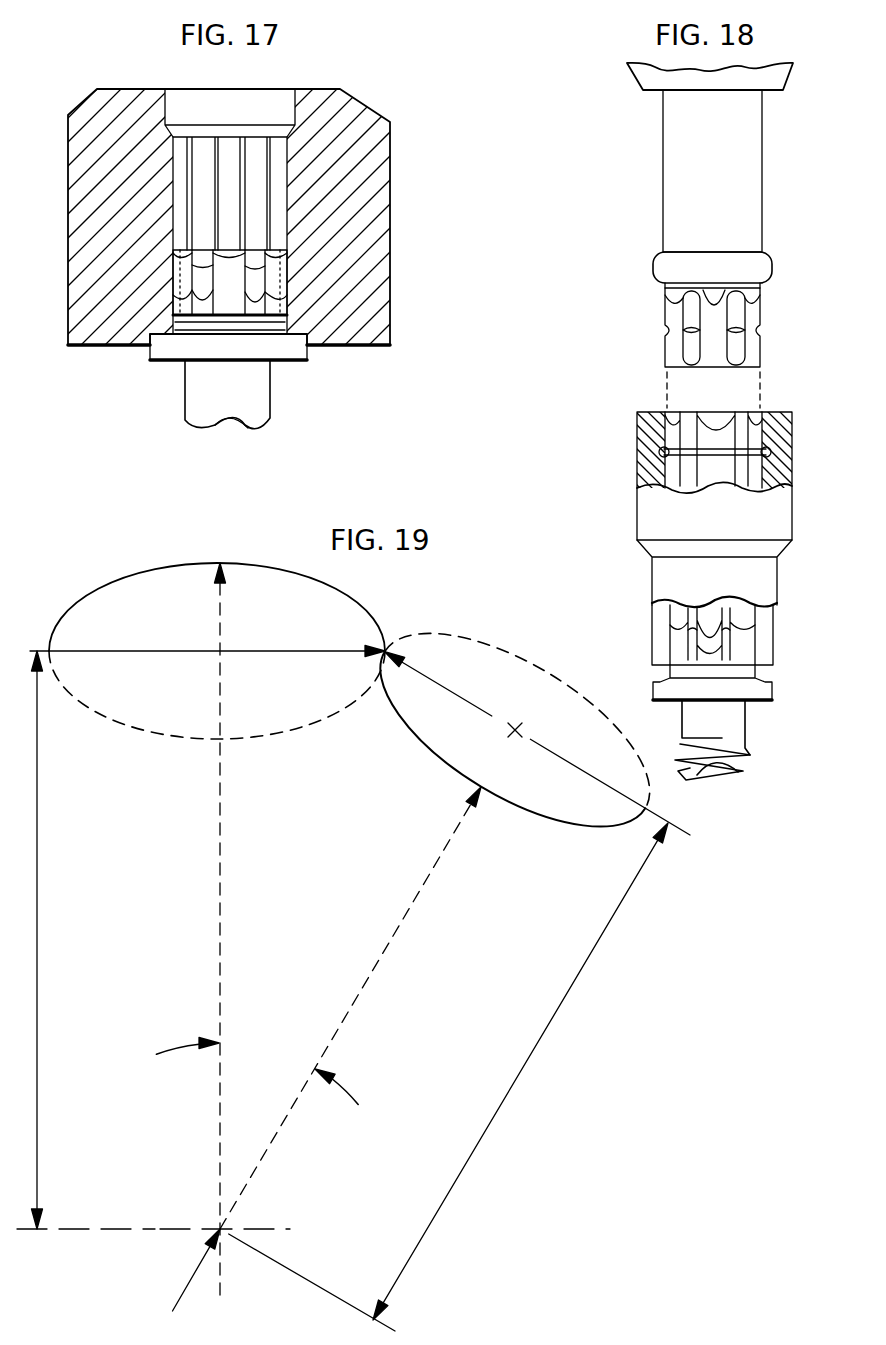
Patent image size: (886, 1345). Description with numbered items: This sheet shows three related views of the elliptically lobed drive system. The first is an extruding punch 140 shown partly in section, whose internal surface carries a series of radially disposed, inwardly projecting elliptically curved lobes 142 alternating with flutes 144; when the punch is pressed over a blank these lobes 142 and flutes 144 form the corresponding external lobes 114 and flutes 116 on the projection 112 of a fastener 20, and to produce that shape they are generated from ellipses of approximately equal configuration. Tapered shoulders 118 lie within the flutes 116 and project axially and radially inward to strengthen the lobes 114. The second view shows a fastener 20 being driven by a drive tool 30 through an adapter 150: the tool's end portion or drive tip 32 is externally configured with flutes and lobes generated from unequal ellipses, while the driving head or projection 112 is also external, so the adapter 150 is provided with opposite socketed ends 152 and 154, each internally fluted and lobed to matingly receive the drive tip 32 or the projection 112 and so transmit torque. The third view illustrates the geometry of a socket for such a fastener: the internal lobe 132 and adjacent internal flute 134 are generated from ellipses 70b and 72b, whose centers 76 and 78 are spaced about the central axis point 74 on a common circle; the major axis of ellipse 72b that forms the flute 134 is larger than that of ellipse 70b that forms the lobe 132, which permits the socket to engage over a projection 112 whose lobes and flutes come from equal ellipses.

In FIG. 17, the fastener 20 is at (258, 392).
In FIG. 18, the fastener 20 is at (723, 722).
In FIG. 18, the drive tool 30 is at (745, 142).
In FIG. 18, the drive tip 32 is at (750, 343).
In FIG. 19, the ellipse 70b is at (472, 642).
In FIG. 19, the ellipse 72b is at (297, 737).
In FIG. 19, the central axis point 74 is at (226, 1226).
In FIG. 19, the center of ellipse 76 is at (516, 731).
In FIG. 19, the center of ellipse 78 is at (213, 655).
In FIG. 17, the projection 112 is at (255, 262).
In FIG. 18, the projection 112 is at (693, 633).
In FIG. 17, the elliptically curved lobes 114 is at (140, 346).
In FIG. 17, the elliptically curved flutes 116 is at (225, 292).
In FIG. 17, the tapered shoulders 118 is at (230, 305).
In FIG. 19, the internal lobe 132 is at (606, 824).
In FIG. 19, the internal flute 134 is at (253, 572).
In FIG. 17, the extruding punch 140 is at (375, 210).
In FIG. 17, the elliptically curved lobes 142 is at (230, 165).
In FIG. 17, the flutes 144 is at (253, 195).
In FIG. 18, the adapter 150 is at (775, 512).
In FIG. 18, the socketed end 152 is at (735, 423).
In FIG. 18, the socketed end 154 is at (747, 642).